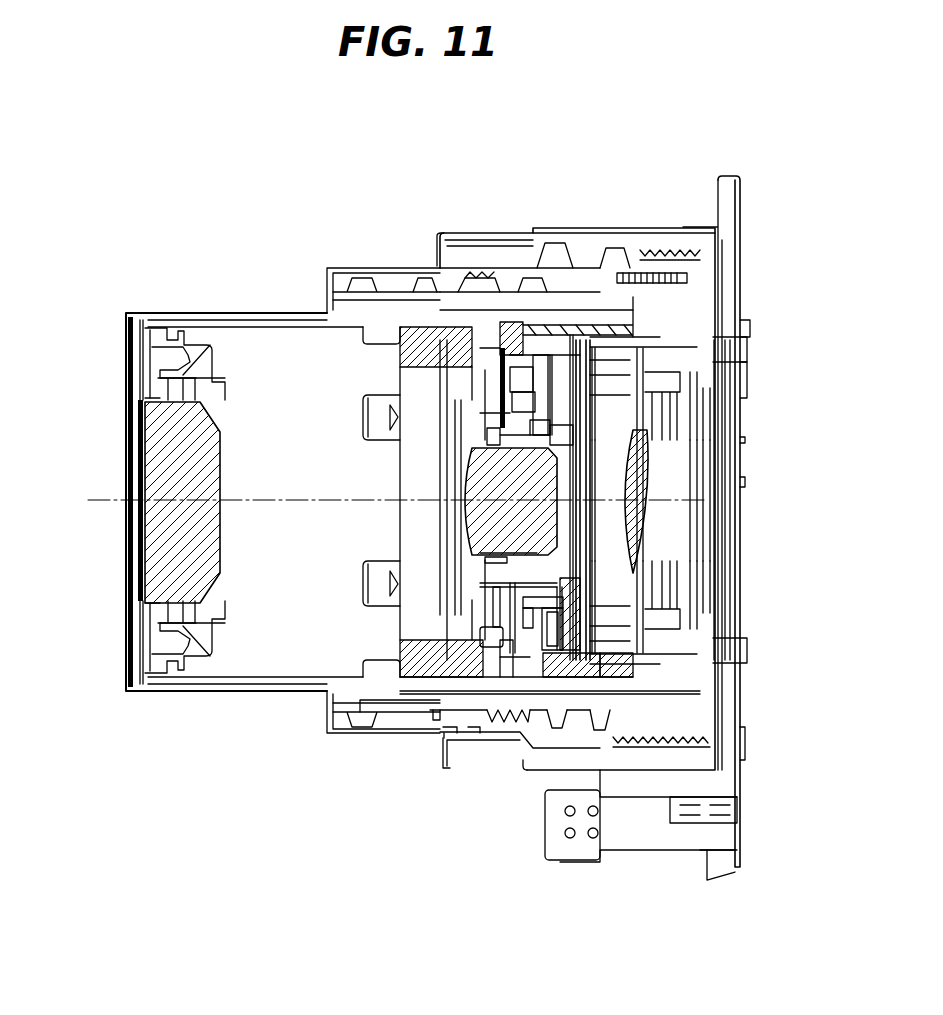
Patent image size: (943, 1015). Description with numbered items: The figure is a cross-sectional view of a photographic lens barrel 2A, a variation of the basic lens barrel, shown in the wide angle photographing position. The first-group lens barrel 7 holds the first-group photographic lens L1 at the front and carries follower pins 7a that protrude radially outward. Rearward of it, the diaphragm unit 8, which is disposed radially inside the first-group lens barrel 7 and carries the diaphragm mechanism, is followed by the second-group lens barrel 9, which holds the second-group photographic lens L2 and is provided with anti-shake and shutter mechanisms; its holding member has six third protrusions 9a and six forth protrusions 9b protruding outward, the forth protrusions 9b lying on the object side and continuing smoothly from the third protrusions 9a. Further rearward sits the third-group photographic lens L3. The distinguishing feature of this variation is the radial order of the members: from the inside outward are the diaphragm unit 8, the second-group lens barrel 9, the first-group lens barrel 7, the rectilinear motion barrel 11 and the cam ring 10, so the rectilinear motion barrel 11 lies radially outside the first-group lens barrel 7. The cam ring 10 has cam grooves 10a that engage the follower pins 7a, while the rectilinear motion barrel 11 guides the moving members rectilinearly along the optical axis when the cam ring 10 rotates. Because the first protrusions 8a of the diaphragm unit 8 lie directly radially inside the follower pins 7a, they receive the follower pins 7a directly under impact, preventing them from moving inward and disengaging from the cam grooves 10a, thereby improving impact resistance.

The photographic lens barrel 2A is at (121, 253).
The first-group lens barrel 7 is at (215, 683).
The follower pins 7a is at (375, 706).
The diaphragm unit 8 is at (448, 662).
The first protrusions 8a is at (380, 332).
The second-group lens barrel 9 is at (572, 663).
The third protrusions 9a is at (582, 327).
The forth protrusions 9b is at (507, 330).
The cam ring 10 is at (465, 720).
The cam grooves 10a is at (372, 716).
The rectilinear motion barrel 11 is at (420, 715).
The first-group photographic lens L1 is at (178, 462).
The second-group photographic lens L2 is at (487, 462).
The third-group photographic lens L3 is at (665, 515).